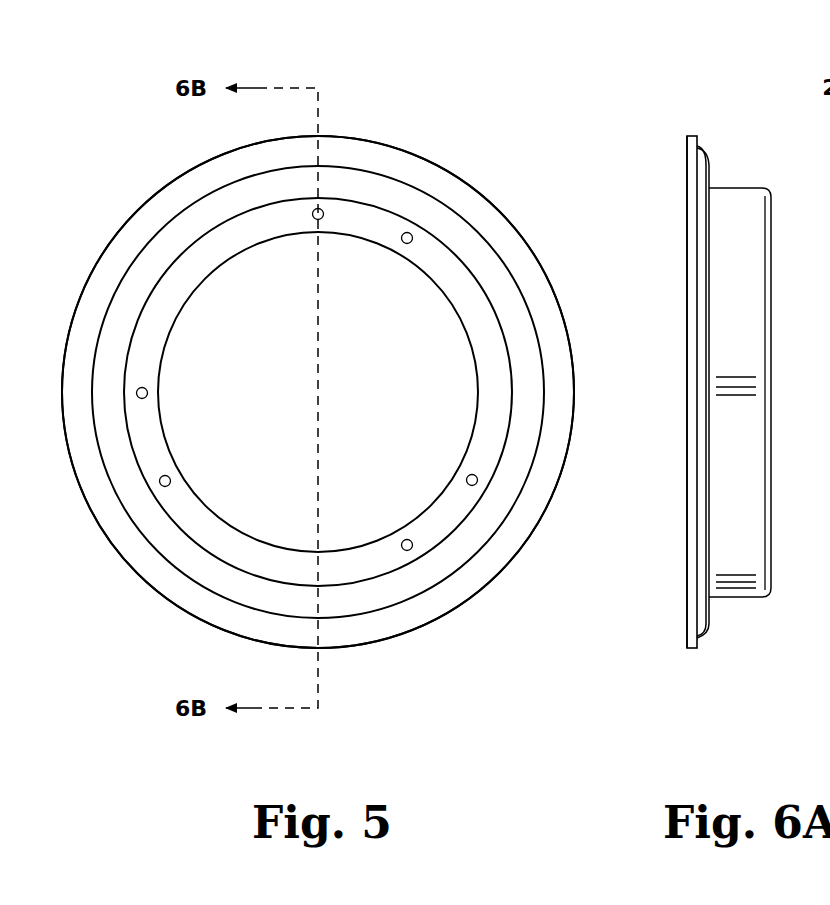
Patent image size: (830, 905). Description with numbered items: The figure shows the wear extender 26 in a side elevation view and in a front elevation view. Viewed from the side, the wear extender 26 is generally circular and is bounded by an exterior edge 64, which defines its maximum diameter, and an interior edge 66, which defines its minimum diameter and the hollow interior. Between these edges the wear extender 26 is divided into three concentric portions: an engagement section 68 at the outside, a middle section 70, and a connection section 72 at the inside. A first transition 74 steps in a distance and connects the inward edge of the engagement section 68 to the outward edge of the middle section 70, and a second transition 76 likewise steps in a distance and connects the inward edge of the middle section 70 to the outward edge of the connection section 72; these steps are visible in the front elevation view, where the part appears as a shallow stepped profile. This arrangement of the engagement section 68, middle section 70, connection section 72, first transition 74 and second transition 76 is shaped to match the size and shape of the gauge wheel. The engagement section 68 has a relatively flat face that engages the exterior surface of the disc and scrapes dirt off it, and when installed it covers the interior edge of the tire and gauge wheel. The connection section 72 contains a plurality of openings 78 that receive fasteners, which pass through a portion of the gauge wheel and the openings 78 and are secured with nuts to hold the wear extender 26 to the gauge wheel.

In FIG. 5, the wear extender 26 is at (133, 178).
In FIG. 6A, the wear extender 26 is at (660, 140).
In FIG. 5, the exterior edge 64 is at (372, 138).
In FIG. 6A, the exterior edge 64 is at (695, 136).
In FIG. 5, the interior edge 66 is at (408, 258).
In FIG. 5, the engagement section 68 is at (430, 175).
In FIG. 6A, the engagement section 68 is at (686, 160).
In FIG. 5, the middle section 70 is at (468, 240).
In FIG. 5, the connection section 72 is at (480, 305).
In FIG. 6A, the first transition 74 is at (705, 148).
In FIG. 6A, the second transition 76 is at (770, 194).
In FIG. 5, the openings 78 is at (148, 393).